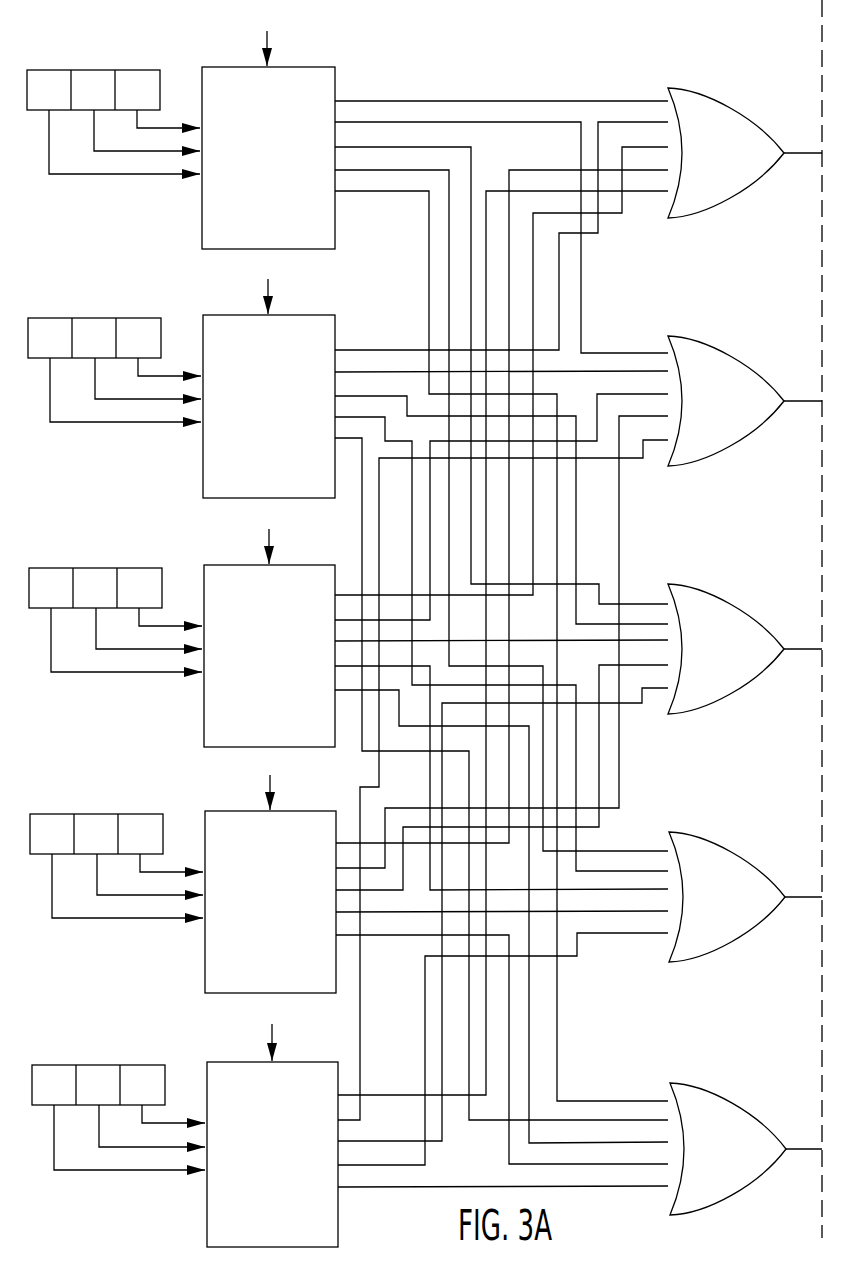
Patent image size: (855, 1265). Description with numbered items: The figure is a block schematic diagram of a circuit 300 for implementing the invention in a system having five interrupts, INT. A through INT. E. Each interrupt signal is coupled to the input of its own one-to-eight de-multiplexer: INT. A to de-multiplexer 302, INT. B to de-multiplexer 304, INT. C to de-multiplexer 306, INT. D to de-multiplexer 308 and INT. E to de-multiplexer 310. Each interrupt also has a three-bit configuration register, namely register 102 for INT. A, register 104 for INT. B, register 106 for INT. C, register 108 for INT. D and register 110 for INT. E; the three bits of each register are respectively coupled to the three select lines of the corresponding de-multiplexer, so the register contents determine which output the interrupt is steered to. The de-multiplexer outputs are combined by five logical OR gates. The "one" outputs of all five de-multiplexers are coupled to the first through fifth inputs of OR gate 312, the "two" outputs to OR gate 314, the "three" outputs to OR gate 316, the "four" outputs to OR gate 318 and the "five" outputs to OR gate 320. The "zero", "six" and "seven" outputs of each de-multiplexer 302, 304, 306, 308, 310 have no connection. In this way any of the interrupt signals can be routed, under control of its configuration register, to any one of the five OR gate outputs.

The configuration register 102 is at (34, 111).
The configuration register 104 is at (35, 359).
The configuration register 106 is at (36, 609).
The configuration register 108 is at (37, 855).
The configuration register 110 is at (39, 1106).
The circuit 300 is at (598, 68).
The one-to-eight de-multiplexer 302 is at (201, 216).
The one-to-eight de-multiplexer 304 is at (202, 464).
The one-to-eight de-multiplexer 306 is at (203, 714).
The one-to-eight de-multiplexer 308 is at (204, 960).
The one-to-eight de-multiplexer 310 is at (206, 1214).
The logical OR gate 312 is at (713, 99).
The logical OR gate 314 is at (713, 349).
The logical OR gate 316 is at (713, 596).
The logical OR gate 318 is at (713, 844).
The logical OR gate 320 is at (713, 1094).